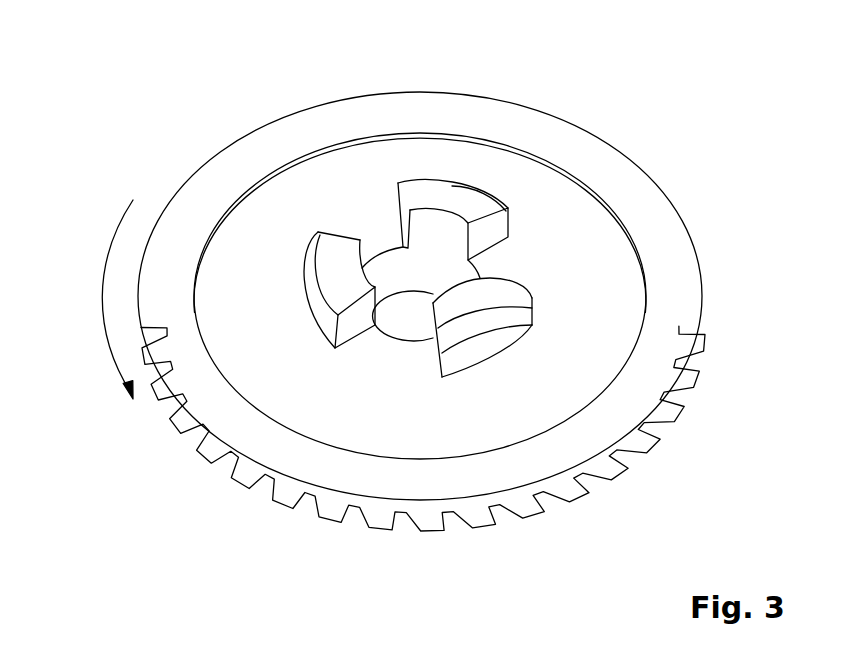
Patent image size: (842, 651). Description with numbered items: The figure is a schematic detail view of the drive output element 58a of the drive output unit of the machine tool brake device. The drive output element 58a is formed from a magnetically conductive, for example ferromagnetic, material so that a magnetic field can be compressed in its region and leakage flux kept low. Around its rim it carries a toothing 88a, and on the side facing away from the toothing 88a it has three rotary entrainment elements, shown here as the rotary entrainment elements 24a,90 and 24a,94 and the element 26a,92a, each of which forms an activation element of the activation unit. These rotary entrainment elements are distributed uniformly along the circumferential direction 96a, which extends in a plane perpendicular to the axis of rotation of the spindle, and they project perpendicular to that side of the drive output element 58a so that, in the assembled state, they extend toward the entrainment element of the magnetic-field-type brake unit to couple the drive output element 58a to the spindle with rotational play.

The drive output element 58a is at (233, 170).
The rotary entrainment element / activation element 24a,90 is at (445, 198).
The rotary entrainment element / activation element 24a,94 is at (347, 317).
The brake element / rotary entrainment element 26a,92a is at (473, 305).
The toothing 88a is at (399, 520).
The circumferential direction 96a is at (105, 287).